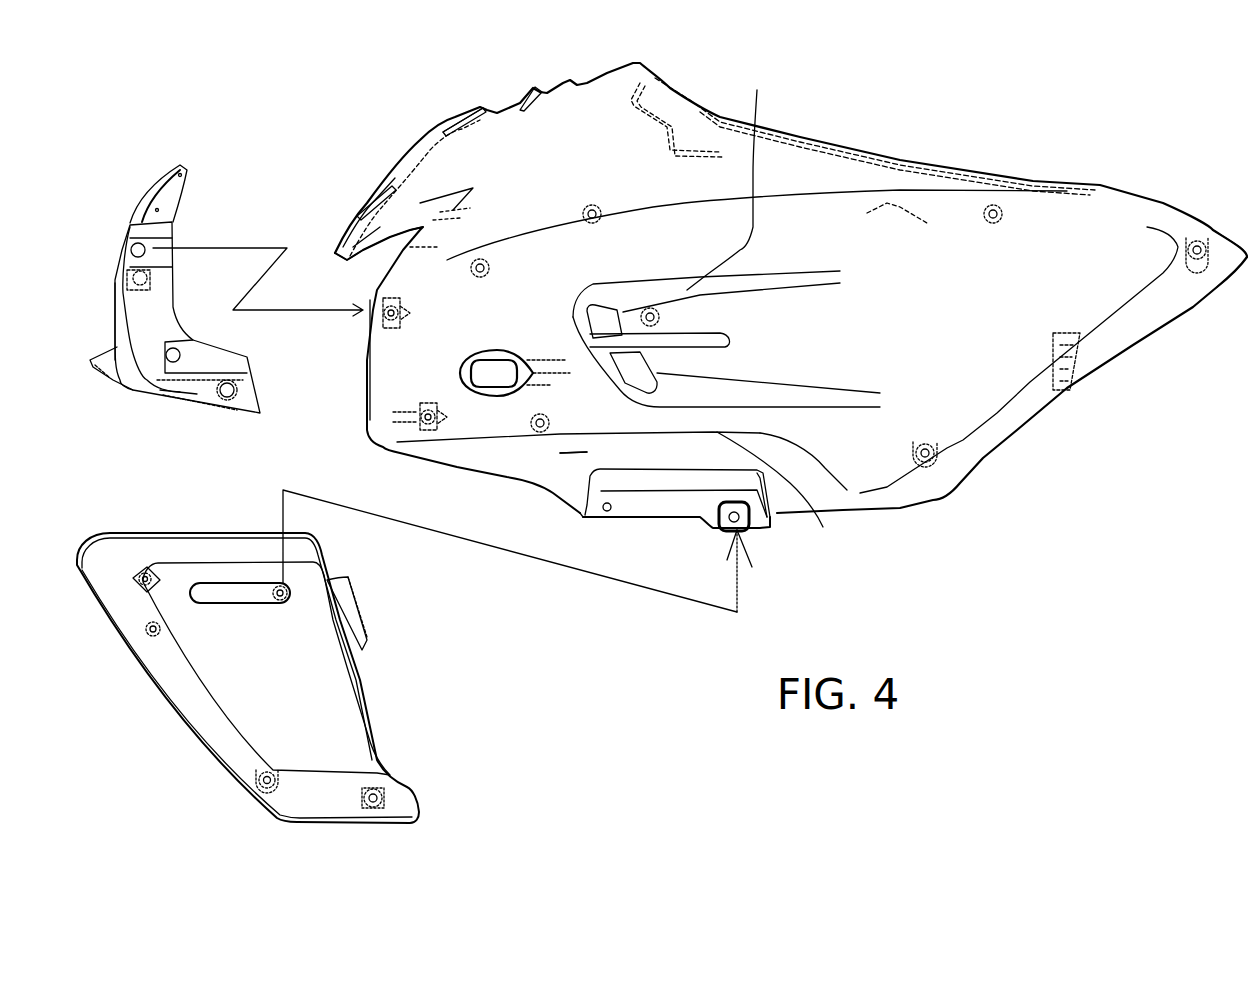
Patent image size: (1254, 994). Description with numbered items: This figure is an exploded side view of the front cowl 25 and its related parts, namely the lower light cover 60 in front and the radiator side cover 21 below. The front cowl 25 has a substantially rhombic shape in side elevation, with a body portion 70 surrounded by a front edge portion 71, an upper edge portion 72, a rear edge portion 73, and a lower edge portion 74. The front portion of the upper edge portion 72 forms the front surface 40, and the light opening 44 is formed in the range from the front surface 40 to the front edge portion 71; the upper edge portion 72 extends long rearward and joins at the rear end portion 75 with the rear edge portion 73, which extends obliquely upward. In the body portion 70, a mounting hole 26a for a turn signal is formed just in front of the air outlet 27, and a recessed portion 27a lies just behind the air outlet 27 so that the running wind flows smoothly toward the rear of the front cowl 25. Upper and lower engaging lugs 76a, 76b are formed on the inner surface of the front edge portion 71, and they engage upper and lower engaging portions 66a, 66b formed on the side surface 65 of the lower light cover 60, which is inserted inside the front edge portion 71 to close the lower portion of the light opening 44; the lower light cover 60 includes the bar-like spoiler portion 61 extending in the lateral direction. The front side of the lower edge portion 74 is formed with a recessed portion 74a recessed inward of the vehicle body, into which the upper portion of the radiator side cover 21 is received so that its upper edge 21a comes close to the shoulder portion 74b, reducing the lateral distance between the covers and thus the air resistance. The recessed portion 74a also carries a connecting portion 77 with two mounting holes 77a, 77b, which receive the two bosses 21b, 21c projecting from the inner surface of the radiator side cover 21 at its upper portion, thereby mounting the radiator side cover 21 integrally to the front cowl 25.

The radiator side cover 21 is at (163, 695).
The upper edge of radiator side cover 21a is at (203, 537).
The boss 21b is at (140, 570).
The boss 21c is at (293, 597).
The front cowl 25 is at (468, 97).
The mounting hole 26a is at (493, 378).
The air outlet 27 is at (637, 370).
The recessed portion 27a is at (732, 175).
The front surface 40 is at (413, 167).
The light opening 44 is at (343, 267).
The lower light cover 60 is at (111, 231).
The spoiler portion 61 is at (90, 360).
The side surface 65 is at (133, 307).
The upper engaging portion 66a is at (128, 222).
The lower engaging portion 66b is at (173, 360).
The body portion 70 is at (797, 207).
The front edge portion 71 is at (370, 377).
The upper edge portion 72 is at (927, 160).
The rear edge portion 73 is at (1133, 337).
The lower edge portion 74 is at (867, 513).
The recessed portion 74a is at (587, 452).
The upper edge (shoulder portion) of recessed portion 74b is at (827, 513).
The rear end portion 75 is at (1247, 240).
The upper engaging lug 76a is at (387, 320).
The lower engaging lug 76b is at (427, 423).
The connecting portion 77 is at (650, 507).
The mounting hole 77a is at (607, 511).
The mounting hole 77b is at (743, 530).